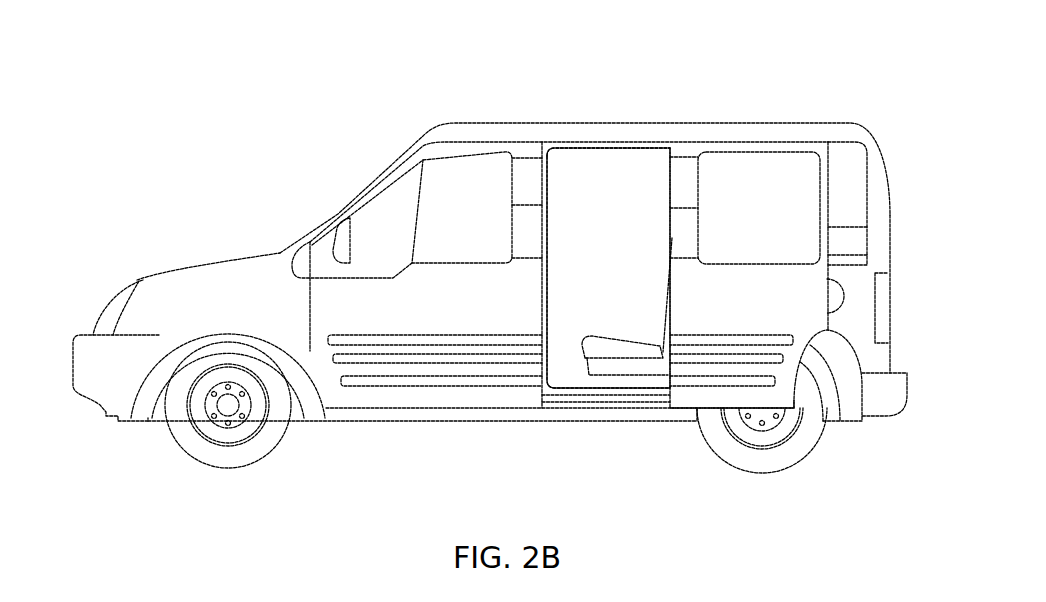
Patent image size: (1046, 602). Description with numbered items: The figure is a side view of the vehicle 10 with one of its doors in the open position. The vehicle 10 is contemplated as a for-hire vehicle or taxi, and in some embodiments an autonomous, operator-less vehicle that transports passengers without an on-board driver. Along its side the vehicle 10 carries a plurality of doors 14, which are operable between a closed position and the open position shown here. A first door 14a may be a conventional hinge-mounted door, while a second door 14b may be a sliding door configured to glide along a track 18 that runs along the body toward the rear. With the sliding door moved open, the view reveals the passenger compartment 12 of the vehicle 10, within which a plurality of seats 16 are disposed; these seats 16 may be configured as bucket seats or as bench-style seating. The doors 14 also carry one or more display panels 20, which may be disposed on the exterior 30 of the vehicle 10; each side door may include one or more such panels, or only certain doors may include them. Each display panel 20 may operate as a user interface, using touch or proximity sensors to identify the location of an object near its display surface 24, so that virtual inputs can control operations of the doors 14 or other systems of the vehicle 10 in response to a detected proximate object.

The vehicle 10 is at (631, 73).
The passenger compartment 12 is at (618, 238).
The doors 14 is at (543, 310).
The first door 14a is at (462, 402).
The second door 14b is at (690, 397).
The seats 16 is at (607, 352).
The track 18 is at (843, 257).
The display panels 20 is at (522, 238).
The display surface 24 is at (555, 164).
The exterior 30 is at (505, 322).